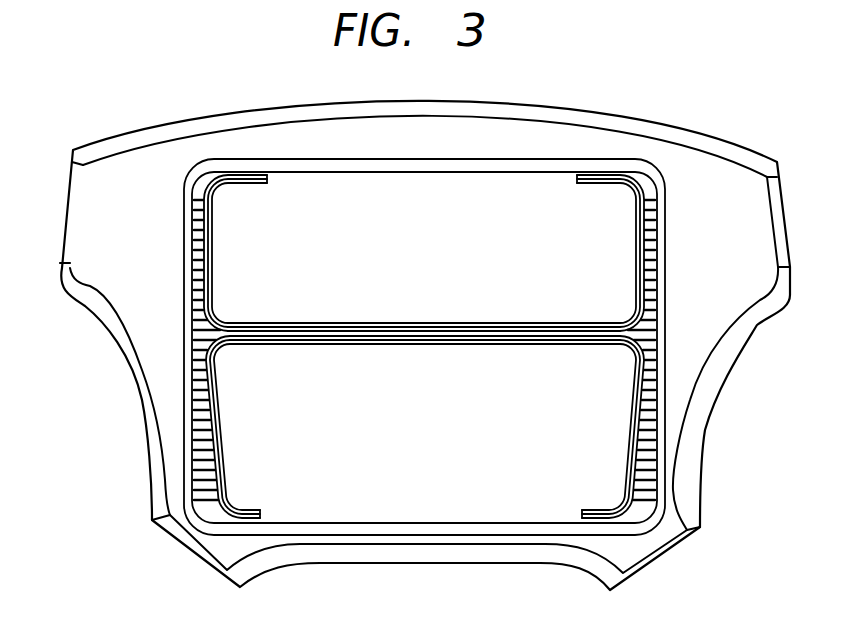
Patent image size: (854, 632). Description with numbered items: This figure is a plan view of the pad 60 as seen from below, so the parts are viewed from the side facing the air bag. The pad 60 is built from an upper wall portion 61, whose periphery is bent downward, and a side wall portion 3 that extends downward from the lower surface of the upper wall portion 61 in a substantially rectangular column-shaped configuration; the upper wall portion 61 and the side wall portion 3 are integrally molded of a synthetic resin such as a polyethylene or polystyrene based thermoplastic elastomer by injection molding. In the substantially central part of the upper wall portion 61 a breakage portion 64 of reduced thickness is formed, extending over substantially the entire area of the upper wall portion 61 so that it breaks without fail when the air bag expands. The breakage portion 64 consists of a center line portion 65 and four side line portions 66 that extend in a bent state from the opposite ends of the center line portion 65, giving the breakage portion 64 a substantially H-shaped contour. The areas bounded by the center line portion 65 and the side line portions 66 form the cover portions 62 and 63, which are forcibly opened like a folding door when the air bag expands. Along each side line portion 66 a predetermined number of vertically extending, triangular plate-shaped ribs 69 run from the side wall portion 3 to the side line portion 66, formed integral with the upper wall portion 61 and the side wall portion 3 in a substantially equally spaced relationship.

The pad 60 is at (150, 125).
The upper wall portion 61 is at (267, 138).
The cover portion 62 is at (233, 198).
The cover portion 63 is at (427, 365).
The breakage portion 64 is at (470, 337).
The center line portion 65 is at (470, 337).
The side line portion 66 is at (207, 247).
The rib 69 is at (194, 276).
The side wall portion 3 is at (183, 182).